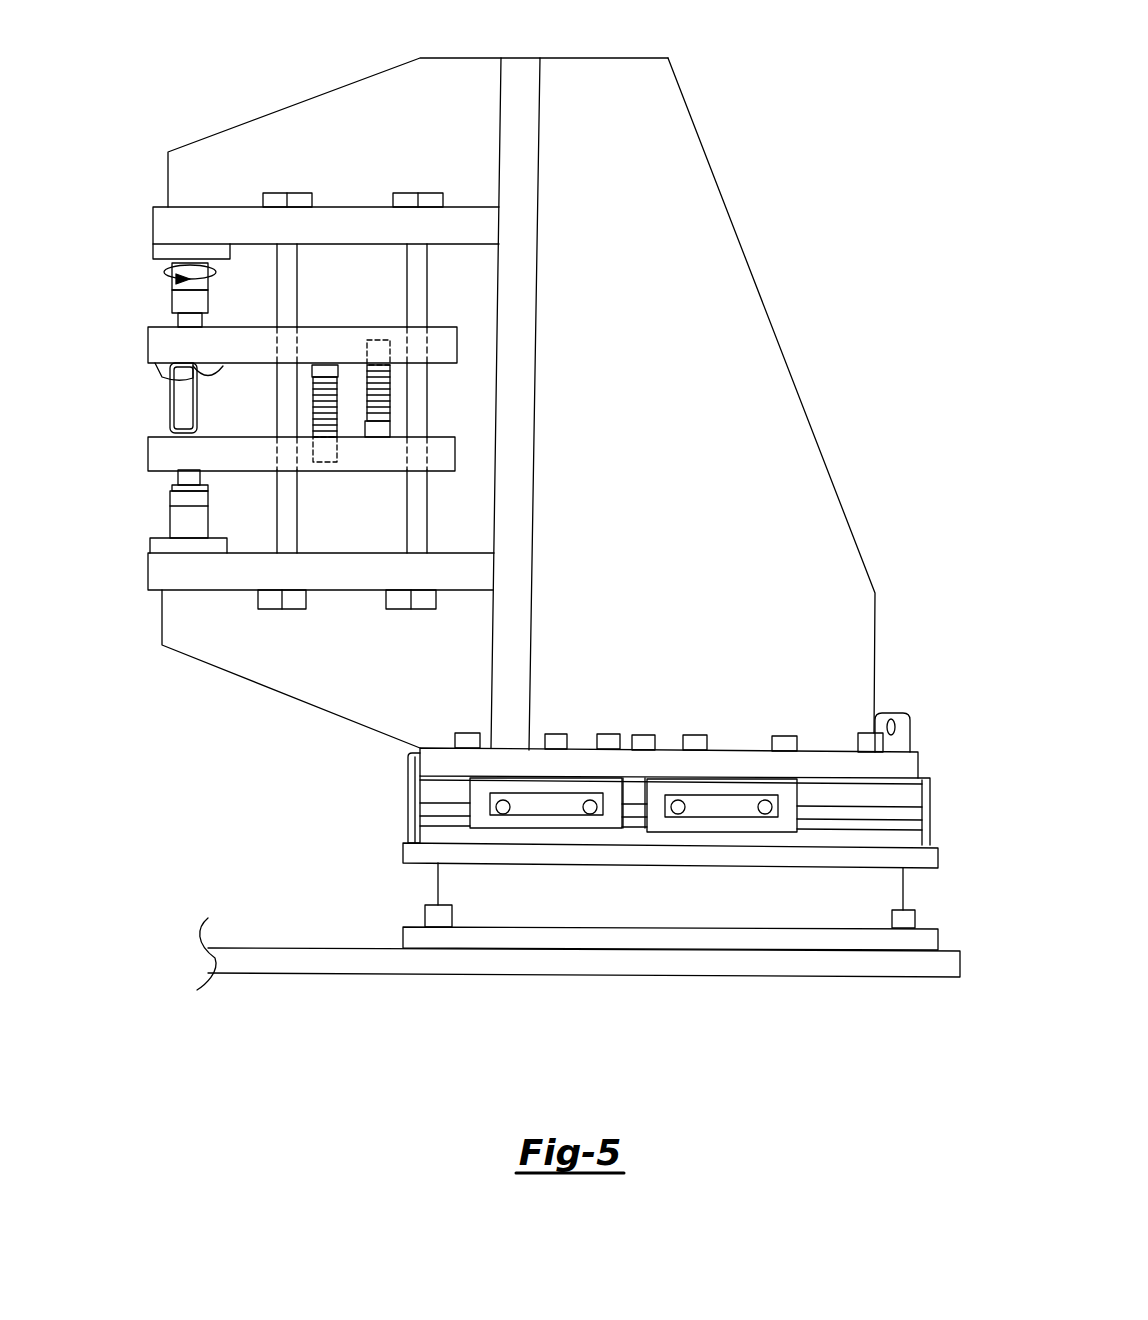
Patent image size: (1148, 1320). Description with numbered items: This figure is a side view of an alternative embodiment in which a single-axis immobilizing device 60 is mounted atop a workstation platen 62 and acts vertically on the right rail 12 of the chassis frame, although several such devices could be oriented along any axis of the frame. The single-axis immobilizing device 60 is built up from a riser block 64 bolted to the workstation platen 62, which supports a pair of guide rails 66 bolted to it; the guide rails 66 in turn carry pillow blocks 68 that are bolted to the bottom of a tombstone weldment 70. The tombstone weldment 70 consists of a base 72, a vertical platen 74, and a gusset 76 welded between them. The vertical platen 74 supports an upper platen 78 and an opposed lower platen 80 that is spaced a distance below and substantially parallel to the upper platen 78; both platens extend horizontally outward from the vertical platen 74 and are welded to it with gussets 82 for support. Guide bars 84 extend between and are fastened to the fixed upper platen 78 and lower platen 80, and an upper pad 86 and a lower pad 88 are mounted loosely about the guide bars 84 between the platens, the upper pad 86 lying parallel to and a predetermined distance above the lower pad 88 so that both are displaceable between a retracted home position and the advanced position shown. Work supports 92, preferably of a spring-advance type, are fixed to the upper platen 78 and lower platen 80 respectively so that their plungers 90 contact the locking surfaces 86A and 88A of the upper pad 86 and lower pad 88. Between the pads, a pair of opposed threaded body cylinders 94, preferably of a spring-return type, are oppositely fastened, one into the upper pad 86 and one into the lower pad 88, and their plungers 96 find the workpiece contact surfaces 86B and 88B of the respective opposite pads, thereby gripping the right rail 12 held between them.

The right rail 12 is at (170, 395).
The single-axis immobilizing device 60 is at (770, 238).
The workstation platen 62 is at (486, 955).
The riser block 64 is at (700, 826).
The guide rails 66 is at (883, 835).
The pillow blocks 68 is at (547, 823).
The tombstone weldment 70 is at (795, 370).
The base 72 is at (582, 757).
The vertical platen 74 is at (527, 78).
The gusset 76 is at (626, 329).
The upper platen 78 is at (158, 216).
The lower platen 80 is at (160, 577).
The gussets 82 is at (331, 145).
The guide bars 84 is at (408, 537).
The upper pad 86 is at (163, 340).
The locking surface 86A is at (265, 327).
The workpiece contact surface 86B is at (197, 366).
The lower pad 88 is at (160, 457).
The locking surface 88A is at (238, 472).
The workpiece contact surface 88B is at (233, 437).
The plungers 90 is at (175, 320).
The work supports 92 is at (200, 297).
The threaded body cylinders 94 is at (366, 378).
The plungers 96 is at (312, 365).